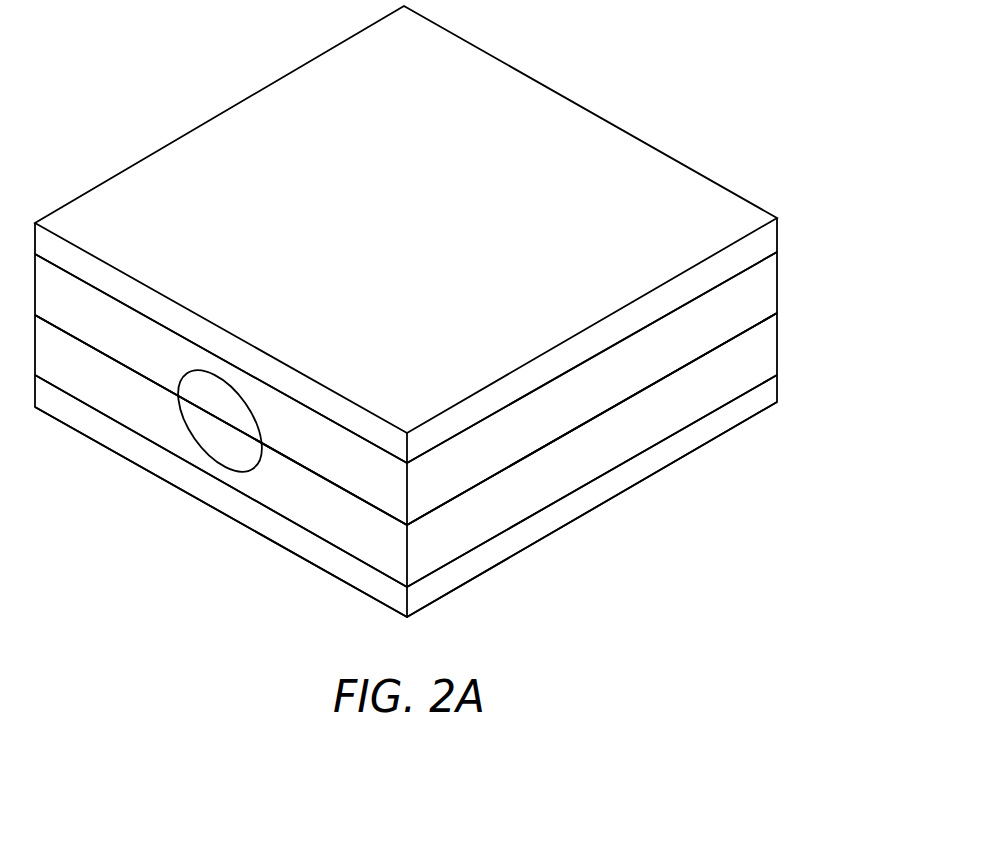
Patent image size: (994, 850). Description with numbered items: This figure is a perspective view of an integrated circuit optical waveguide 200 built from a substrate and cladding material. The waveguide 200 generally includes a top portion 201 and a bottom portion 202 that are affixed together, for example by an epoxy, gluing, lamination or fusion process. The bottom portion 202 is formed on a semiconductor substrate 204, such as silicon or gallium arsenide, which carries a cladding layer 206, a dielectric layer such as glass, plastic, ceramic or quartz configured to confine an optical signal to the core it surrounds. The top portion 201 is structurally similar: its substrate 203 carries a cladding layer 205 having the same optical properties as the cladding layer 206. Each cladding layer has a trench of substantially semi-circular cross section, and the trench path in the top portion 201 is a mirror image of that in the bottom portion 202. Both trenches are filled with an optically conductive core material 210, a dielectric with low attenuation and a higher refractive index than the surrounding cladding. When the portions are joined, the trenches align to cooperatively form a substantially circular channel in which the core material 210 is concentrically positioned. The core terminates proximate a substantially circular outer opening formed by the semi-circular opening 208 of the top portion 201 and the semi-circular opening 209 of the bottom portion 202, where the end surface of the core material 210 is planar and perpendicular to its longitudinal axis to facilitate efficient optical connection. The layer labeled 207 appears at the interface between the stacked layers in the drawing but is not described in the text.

The waveguide 200 is at (745, 80).
The top portion 201 is at (566, 100).
The bottom portion 202 is at (616, 498).
The substrate 203 is at (772, 235).
The semiconductor substrate 204 is at (772, 392).
The cladding layer 205 is at (772, 278).
The cladding layer 206 is at (772, 353).
The interface layer 207 is at (758, 325).
The first substantially semi-circular opening 208 is at (196, 371).
The first substantially semi-circular opening 209 is at (262, 466).
The core material 210 is at (242, 431).